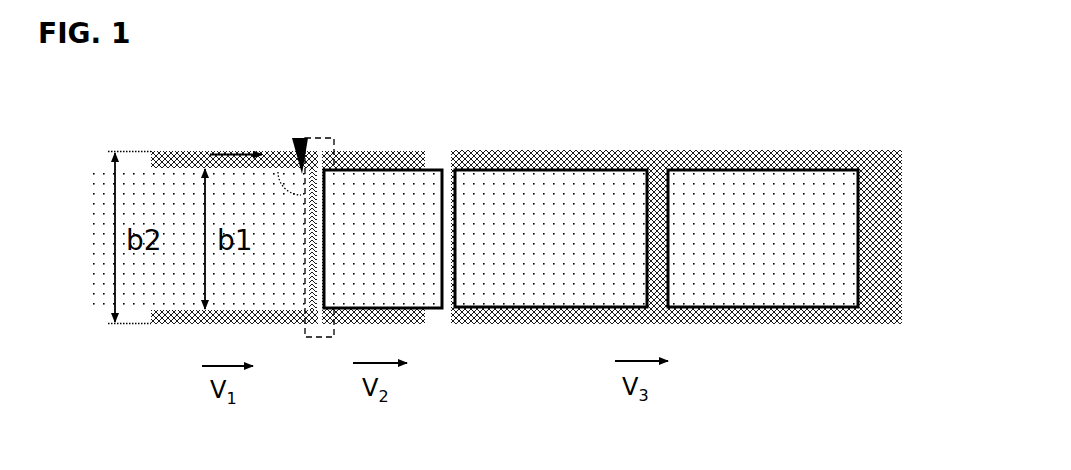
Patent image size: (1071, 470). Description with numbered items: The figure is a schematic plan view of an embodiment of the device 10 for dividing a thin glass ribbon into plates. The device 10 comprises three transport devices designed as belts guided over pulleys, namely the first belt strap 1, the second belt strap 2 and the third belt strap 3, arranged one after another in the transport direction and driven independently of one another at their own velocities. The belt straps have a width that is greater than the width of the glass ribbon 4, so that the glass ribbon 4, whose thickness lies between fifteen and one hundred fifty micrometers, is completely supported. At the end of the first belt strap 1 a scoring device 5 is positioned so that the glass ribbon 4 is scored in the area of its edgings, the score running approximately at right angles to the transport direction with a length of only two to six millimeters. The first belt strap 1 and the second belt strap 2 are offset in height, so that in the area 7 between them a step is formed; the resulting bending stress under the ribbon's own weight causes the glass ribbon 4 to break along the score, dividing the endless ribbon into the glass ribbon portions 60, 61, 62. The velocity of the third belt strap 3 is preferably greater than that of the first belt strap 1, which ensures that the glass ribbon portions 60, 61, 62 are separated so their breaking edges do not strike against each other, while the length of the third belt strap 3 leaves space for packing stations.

The first belt strap 1 is at (200, 152).
The second belt strap 2 is at (403, 224).
The third belt strap 3 is at (676, 179).
The glass ribbon 4 is at (105, 198).
The scoring device 5 is at (294, 138).
The area between first and second belt straps 7 is at (317, 337).
The device 10 is at (675, 64).
The glass ribbon portion 60 is at (408, 293).
The glass ribbon portion 61 is at (593, 172).
The glass ribbon portion 62 is at (777, 182).